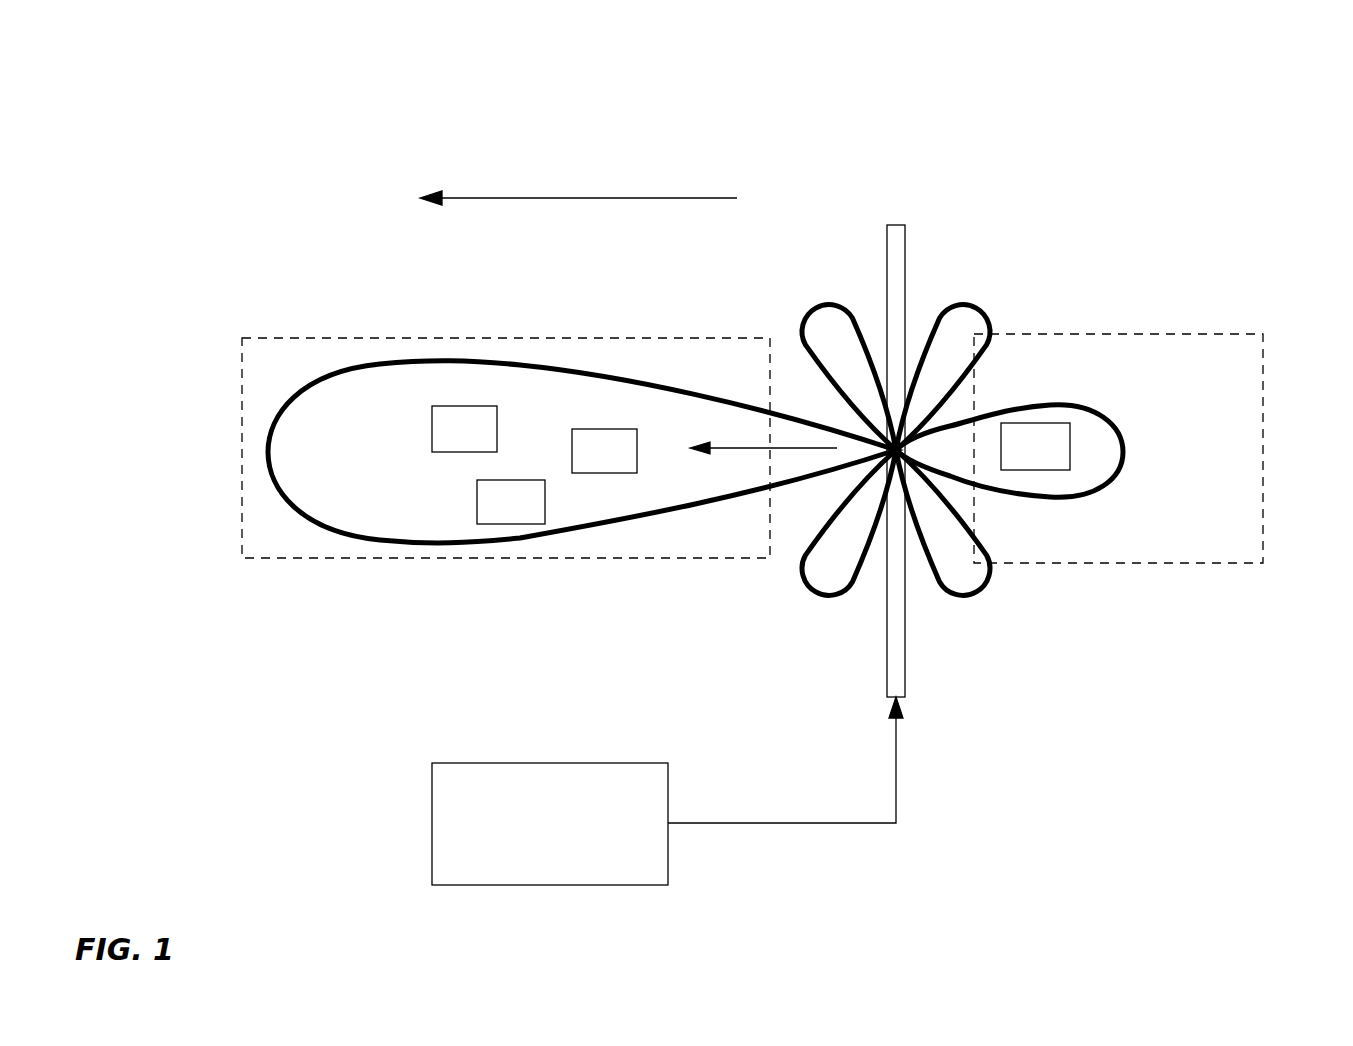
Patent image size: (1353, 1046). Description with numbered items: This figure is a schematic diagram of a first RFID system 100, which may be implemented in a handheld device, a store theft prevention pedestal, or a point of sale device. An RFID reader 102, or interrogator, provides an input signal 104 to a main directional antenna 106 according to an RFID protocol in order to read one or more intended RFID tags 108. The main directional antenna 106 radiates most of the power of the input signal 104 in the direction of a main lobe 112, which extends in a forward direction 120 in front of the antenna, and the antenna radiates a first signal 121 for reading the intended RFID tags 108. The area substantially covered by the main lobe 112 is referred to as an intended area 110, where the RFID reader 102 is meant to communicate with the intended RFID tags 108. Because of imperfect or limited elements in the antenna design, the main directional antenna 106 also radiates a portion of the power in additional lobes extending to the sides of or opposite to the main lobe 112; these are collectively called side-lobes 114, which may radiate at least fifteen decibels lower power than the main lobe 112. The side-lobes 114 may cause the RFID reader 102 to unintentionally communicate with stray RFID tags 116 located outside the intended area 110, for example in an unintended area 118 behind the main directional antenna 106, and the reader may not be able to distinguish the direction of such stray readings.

The first RFID system 100 is at (162, 97).
The RFID reader 102 is at (550, 824).
The input signal 104 is at (742, 822).
The main directional antenna 106 is at (900, 247).
The intended RFID tags 108 is at (534, 465).
The intended area 110 is at (527, 338).
The main lobe 112 is at (302, 380).
The side-lobes 114 is at (812, 303).
The stray RFID tags 116 is at (1035, 446).
The unintended area 118 is at (1262, 418).
The forward direction 120 is at (591, 198).
The first signal 121 is at (745, 445).